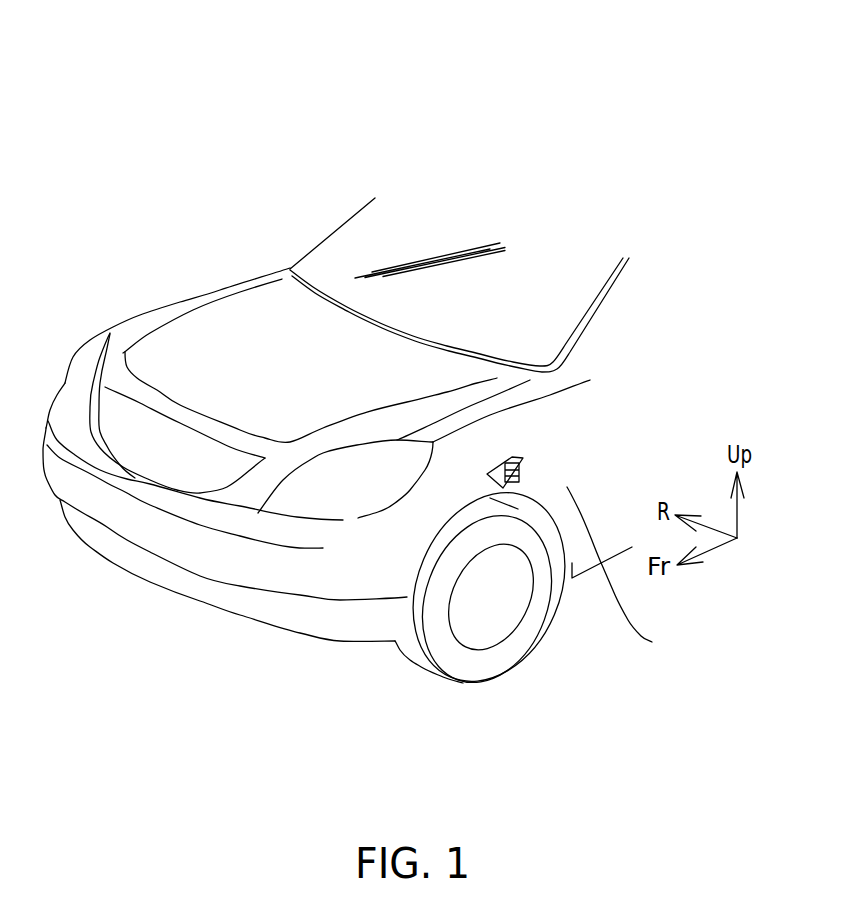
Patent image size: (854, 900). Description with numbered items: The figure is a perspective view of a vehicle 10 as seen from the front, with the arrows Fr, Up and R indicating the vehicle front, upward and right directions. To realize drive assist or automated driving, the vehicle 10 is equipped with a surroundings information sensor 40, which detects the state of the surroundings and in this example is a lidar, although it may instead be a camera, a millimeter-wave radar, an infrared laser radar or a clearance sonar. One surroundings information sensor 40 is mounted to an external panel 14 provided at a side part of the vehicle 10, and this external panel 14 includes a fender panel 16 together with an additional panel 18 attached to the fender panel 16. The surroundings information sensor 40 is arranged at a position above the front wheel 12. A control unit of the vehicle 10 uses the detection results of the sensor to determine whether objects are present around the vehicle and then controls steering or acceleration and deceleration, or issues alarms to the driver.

The vehicle 10 is at (301, 112).
The front wheel 12 is at (500, 653).
The external panel 14 is at (646, 572).
The fender panel 16 is at (646, 572).
The additional panel 18 is at (503, 455).
The surroundings information sensor 40 is at (534, 458).